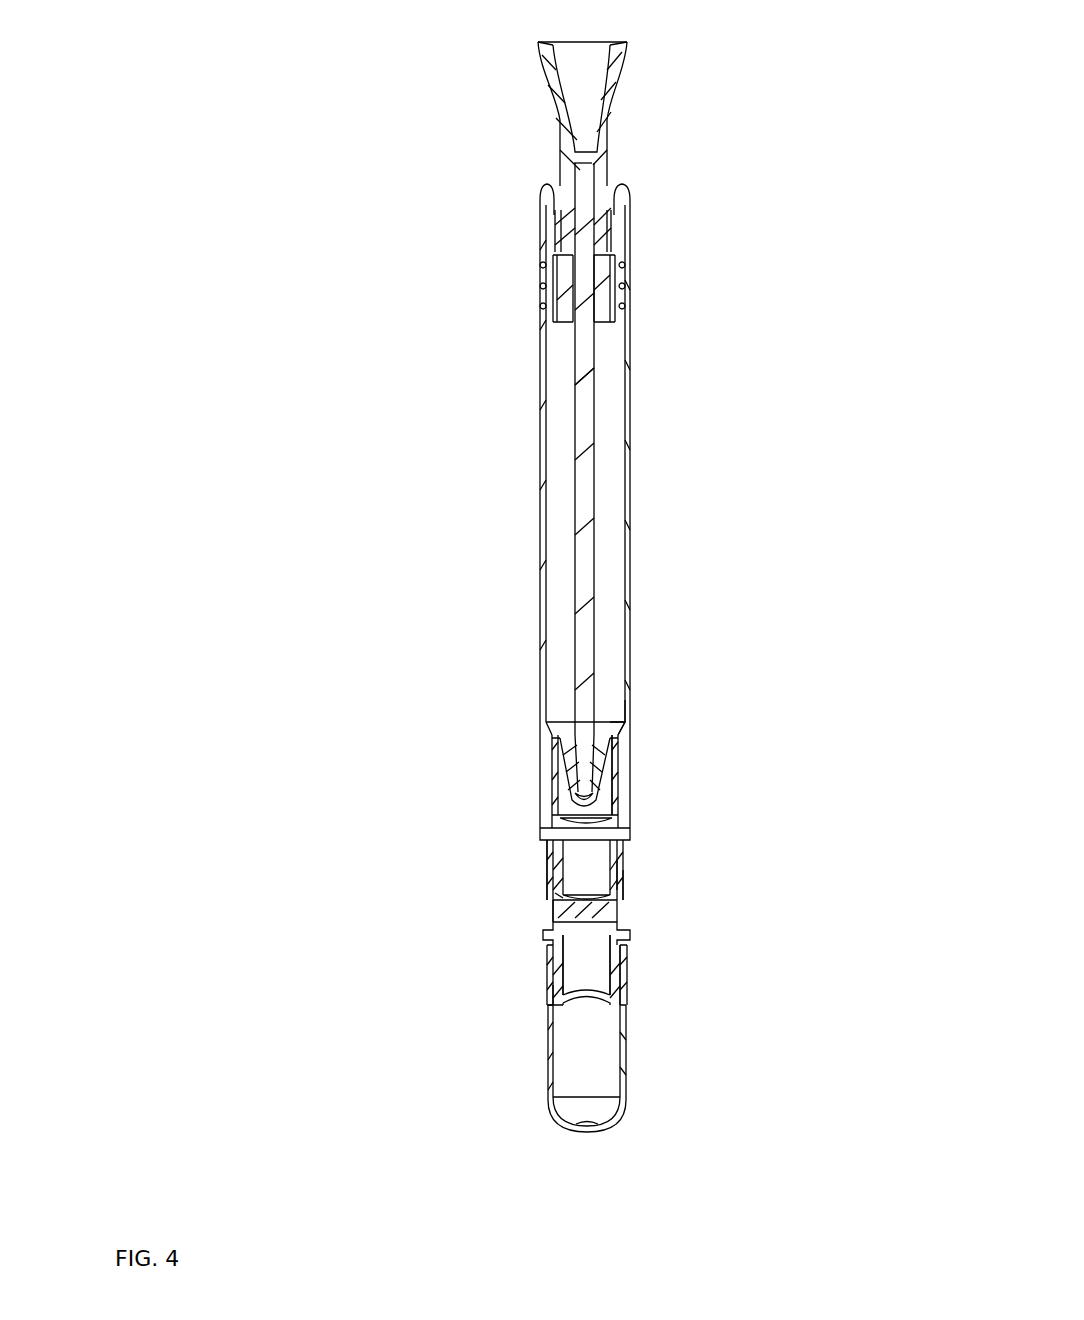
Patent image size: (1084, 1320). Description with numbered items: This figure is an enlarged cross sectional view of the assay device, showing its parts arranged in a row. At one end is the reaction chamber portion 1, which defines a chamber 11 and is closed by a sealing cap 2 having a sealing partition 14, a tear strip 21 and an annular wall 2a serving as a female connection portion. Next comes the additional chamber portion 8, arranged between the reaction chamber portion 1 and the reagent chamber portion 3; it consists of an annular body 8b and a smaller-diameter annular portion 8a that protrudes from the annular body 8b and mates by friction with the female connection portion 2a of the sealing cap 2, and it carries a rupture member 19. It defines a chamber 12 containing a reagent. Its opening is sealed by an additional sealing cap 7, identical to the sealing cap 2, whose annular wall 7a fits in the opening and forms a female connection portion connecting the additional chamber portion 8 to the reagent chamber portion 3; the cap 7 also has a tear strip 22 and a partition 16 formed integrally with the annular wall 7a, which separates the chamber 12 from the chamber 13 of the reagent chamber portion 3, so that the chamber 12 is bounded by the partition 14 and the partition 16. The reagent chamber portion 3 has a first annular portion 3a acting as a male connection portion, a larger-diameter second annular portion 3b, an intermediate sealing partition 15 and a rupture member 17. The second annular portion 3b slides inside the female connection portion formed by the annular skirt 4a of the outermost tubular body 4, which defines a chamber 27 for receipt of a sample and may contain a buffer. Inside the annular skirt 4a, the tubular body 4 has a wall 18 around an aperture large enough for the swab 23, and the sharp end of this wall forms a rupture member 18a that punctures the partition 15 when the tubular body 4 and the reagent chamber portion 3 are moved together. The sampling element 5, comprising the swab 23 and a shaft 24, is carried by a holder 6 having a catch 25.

The reaction chamber portion 1 is at (622, 1108).
The sealing cap 2 is at (626, 984).
The annular wall of sealing cap 2a is at (626, 998).
The reagent chamber portion 3 is at (548, 792).
The first annular portion of reagent chamber portion 3a is at (550, 858).
The second annular portion of reagent chamber portion 3b is at (632, 775).
The tubular body 4 is at (545, 585).
The annular skirt of the tubular body 4a is at (632, 805).
The sampling element 5 is at (588, 530).
The holder 6 is at (608, 100).
The additional sealing cap 7 is at (630, 859).
The annular wall of sealing cap 7a is at (630, 886).
The additional chamber portion 8 is at (630, 906).
The annular portion of additional chamber portion 8a is at (626, 971).
The annular body of additional chamber portion 8b is at (630, 873).
The chamber defined by the reaction chamber portion 11 is at (600, 1068).
The chamber defined by the additional chamber portion 12 is at (585, 957).
The chamber defined by the reagent chamber portion 13 is at (630, 847).
The sealing partition of the sealing cap 14 is at (553, 1002).
The sealing partition of the reagent chamber portion 15 is at (632, 818).
The sealing partition of the sealing cap 16 is at (560, 903).
The rupture member of the reagent chamber portion 17 is at (560, 893).
The wall of the tubular body 18 is at (560, 745).
The rupture member of the tubular body 18a is at (572, 777).
The rupture member of the additional chamber portion 19 is at (625, 1010).
The tear strip of the sealing cap 21 is at (545, 935).
The tear strip of the sealing cap 22 is at (556, 834).
The swab of the sampling element 23 is at (623, 748).
The shaft of the sampling element 24 is at (585, 494).
The catch of the holder 25 is at (545, 190).
The chamber of tubular body 27 is at (612, 680).